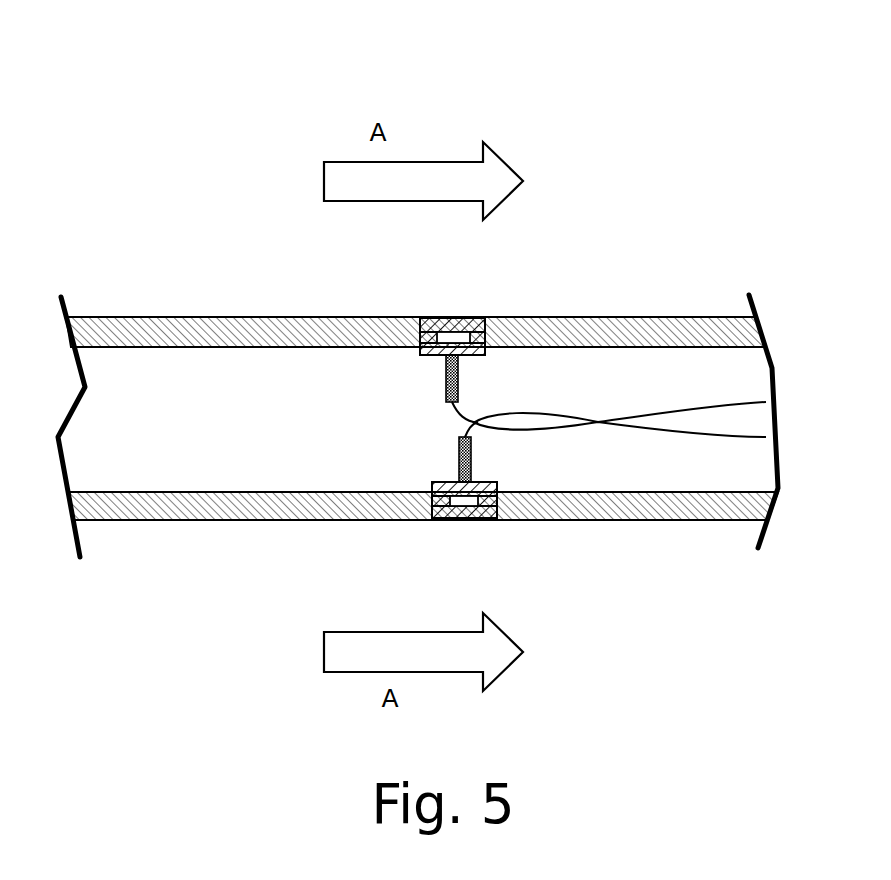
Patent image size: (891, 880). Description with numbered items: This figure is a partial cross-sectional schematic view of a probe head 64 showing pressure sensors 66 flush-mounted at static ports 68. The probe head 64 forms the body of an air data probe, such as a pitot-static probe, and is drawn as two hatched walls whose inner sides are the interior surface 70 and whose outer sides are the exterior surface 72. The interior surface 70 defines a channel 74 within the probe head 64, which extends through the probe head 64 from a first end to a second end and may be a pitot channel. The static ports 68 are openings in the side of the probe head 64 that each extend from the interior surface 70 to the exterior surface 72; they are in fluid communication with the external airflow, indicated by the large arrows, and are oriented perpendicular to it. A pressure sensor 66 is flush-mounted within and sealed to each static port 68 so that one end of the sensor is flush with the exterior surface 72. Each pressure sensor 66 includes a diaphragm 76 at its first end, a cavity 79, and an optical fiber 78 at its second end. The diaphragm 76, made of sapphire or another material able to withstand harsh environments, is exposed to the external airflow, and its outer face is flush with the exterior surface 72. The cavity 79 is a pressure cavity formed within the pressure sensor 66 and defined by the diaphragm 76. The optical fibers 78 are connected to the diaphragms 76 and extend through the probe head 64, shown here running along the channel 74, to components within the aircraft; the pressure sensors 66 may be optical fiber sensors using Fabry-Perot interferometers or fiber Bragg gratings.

The probe head 64 is at (115, 142).
The pressure sensor 66 is at (466, 303).
The static port 68 is at (479, 318).
The interior surface 70 is at (177, 347).
The exterior surface 72 is at (228, 317).
The channel 74 is at (177, 492).
The diaphragm 76 is at (438, 332).
The optical fiber 78 is at (752, 401).
The cavity 79 is at (451, 337).